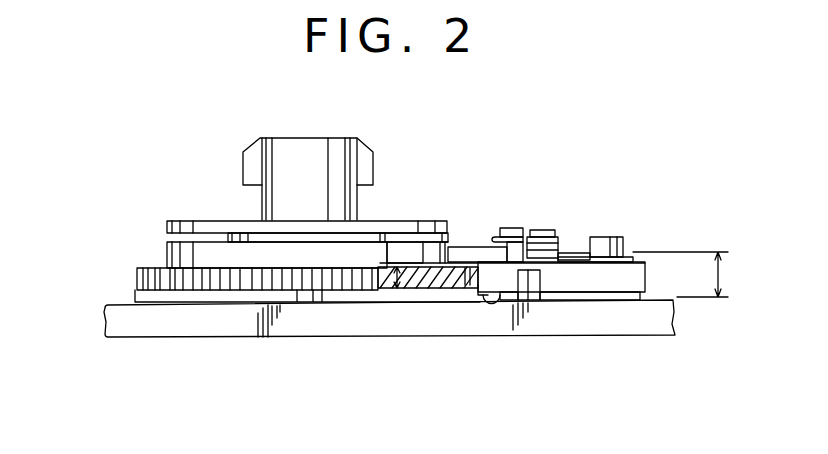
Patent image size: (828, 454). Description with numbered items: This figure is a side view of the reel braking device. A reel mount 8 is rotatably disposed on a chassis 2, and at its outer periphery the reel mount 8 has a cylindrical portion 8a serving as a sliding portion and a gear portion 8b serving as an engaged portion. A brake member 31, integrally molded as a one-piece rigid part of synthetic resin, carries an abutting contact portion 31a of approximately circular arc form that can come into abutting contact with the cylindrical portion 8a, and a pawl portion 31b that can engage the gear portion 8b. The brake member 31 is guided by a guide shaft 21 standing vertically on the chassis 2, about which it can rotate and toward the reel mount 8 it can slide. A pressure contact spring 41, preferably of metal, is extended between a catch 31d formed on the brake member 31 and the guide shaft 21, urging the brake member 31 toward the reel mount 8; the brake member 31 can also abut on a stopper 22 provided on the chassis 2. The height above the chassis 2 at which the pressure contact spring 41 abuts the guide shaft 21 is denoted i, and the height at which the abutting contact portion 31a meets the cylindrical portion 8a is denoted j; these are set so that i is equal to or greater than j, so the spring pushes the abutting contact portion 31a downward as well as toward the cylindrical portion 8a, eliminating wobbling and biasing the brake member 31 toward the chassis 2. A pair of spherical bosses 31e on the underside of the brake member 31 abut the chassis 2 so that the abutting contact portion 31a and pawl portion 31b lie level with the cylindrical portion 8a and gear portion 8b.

The chassis 2 is at (215, 325).
The reel mount 8 is at (290, 163).
The cylindrical portion 8a is at (168, 253).
The gear portion 8b is at (135, 278).
The brake member 31 is at (618, 285).
The abutting contact portion 31a is at (467, 255).
The pawl portion 31b is at (482, 295).
The catch 31d is at (518, 227).
The spherical bosses 31e is at (492, 303).
The stopper 22 is at (527, 302).
The pressure contact spring 41 is at (575, 247).
The guide shaft 21 is at (615, 233).
The height of spring abutment position i is at (685, 274).
The height of abutting contact position j is at (381, 290).